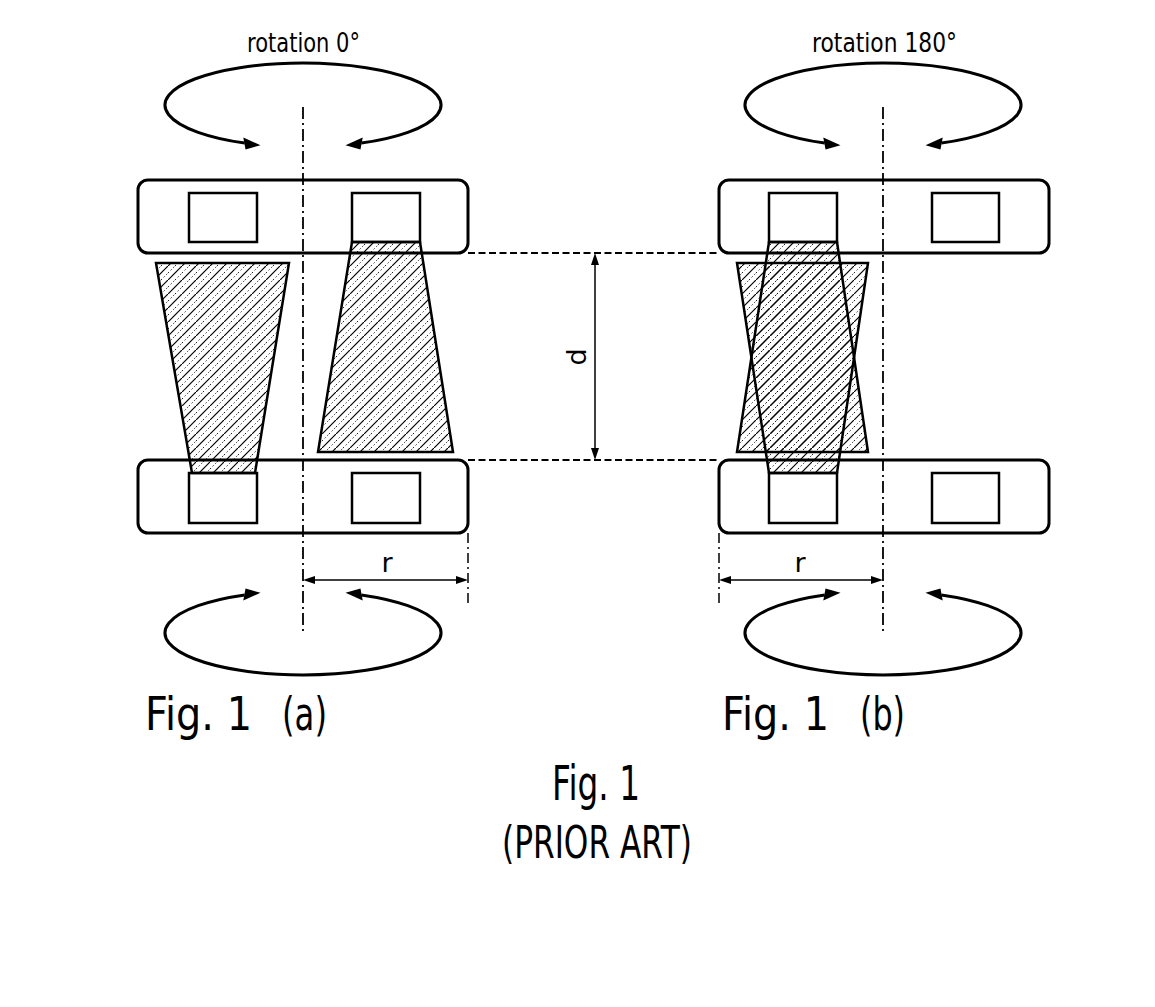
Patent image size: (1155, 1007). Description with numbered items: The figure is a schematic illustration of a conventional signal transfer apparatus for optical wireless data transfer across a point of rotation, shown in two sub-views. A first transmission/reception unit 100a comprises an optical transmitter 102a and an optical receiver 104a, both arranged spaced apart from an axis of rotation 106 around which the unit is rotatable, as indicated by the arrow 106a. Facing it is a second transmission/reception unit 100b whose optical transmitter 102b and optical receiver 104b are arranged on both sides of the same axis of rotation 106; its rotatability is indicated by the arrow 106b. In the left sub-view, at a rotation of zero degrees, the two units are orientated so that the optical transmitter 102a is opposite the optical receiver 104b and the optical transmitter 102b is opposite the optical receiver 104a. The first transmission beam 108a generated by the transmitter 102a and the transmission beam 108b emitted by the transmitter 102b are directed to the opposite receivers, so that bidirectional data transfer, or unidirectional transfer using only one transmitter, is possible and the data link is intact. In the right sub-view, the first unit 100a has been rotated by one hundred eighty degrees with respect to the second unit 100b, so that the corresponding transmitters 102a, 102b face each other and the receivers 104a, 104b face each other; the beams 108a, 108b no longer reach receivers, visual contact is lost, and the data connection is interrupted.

The first transmission/reception unit 100a is at (140, 195).
The second transmission/reception unit 100b is at (140, 520).
The optical transmitter 102a is at (420, 221).
The optical transmitter 102b is at (189, 500).
The optical receiver 104a is at (189, 220).
The optical receiver 104b is at (420, 500).
The axis of rotation 106 is at (303, 566).
The arrow 106a is at (442, 105).
The arrow 106b is at (442, 633).
The first transmission beam 108a is at (437, 348).
The transmission beam 108b is at (172, 366).